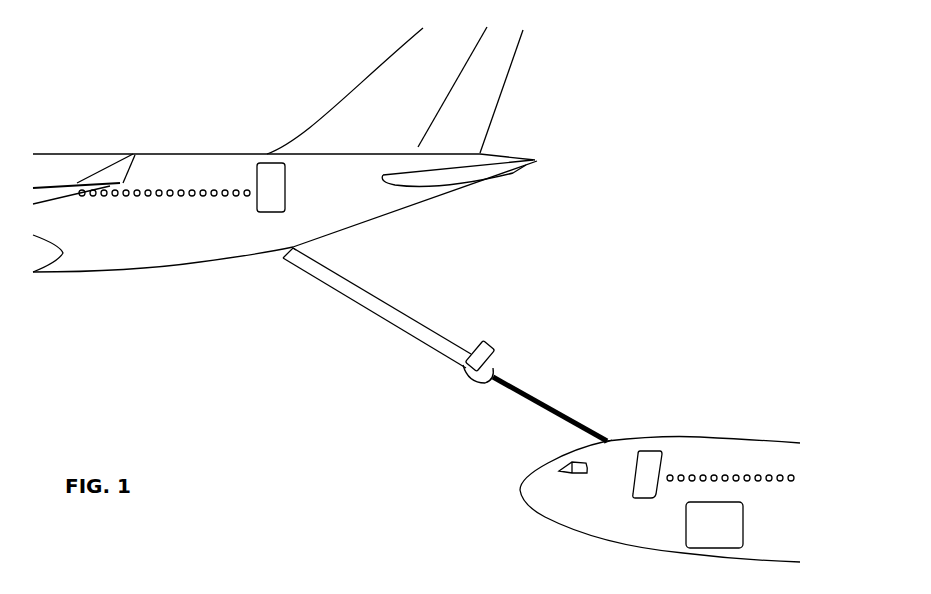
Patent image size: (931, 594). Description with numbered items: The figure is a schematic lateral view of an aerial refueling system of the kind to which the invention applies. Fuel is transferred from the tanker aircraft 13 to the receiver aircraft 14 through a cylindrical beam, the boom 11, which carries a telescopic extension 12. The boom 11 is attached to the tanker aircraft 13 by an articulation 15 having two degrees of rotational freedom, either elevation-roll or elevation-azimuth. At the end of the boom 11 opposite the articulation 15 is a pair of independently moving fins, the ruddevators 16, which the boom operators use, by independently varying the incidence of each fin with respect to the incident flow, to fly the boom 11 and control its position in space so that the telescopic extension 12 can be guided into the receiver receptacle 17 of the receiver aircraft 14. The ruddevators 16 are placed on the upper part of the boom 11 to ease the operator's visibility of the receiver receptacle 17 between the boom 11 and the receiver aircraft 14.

The boom 11 is at (395, 328).
The telescopic extension 12 is at (553, 410).
The tanker aircraft 13 is at (200, 173).
The receiver aircraft 14 is at (743, 462).
The articulation 15 is at (283, 257).
The ruddevators 16 is at (489, 349).
The receiver receptacle 17 is at (611, 440).